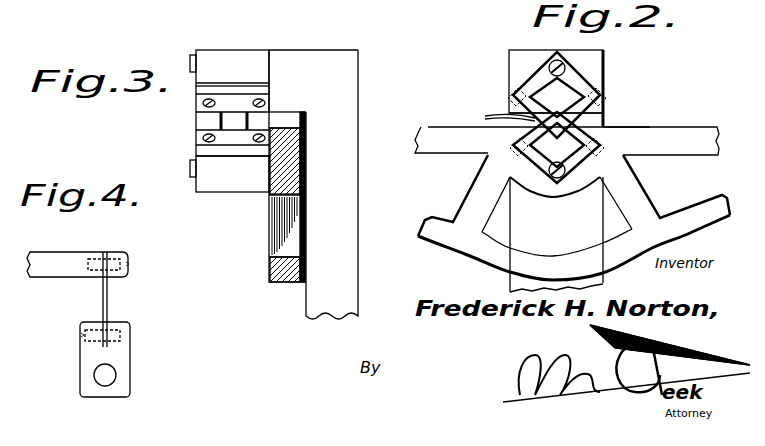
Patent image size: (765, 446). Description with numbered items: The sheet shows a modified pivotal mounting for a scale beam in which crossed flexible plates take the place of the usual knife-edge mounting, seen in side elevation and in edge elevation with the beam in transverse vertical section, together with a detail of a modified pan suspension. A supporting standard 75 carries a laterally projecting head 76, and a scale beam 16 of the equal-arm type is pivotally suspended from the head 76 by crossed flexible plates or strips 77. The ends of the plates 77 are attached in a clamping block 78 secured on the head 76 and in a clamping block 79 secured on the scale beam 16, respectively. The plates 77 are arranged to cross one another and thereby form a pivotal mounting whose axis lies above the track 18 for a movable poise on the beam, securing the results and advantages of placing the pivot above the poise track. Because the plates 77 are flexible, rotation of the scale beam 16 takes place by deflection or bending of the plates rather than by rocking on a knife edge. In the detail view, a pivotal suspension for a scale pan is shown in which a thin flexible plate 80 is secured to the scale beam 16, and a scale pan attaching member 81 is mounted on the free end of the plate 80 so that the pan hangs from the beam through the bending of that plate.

In FIG. 3, the scale beam 16 is at (268, 274).
In FIG. 2, the scale beam 16 is at (682, 134).
In FIG. 3, the track 18 is at (288, 126).
In FIG. 2, the track 18 is at (628, 129).
In FIG. 3, the supporting standard 75 is at (337, 183).
In FIG. 2, the supporting standard 75 is at (574, 223).
In FIG. 3, the head 76 is at (287, 61).
In FIG. 4, the head 76 is at (50, 265).
In FIG. 2, the head 76 is at (590, 62).
In FIG. 3, the flexible plates 77 is at (248, 124).
In FIG. 2, the flexible plates 77 is at (494, 114).
In FIG. 3, the clamping block 78 is at (236, 63).
In FIG. 2, the clamping block 78 is at (537, 73).
In FIG. 3, the clamping block 79 is at (229, 181).
In FIG. 2, the clamping block 79 is at (583, 164).
In FIG. 4, the flexible plate 80 is at (107, 301).
In FIG. 4, the scale pan attaching member 81 is at (120, 341).